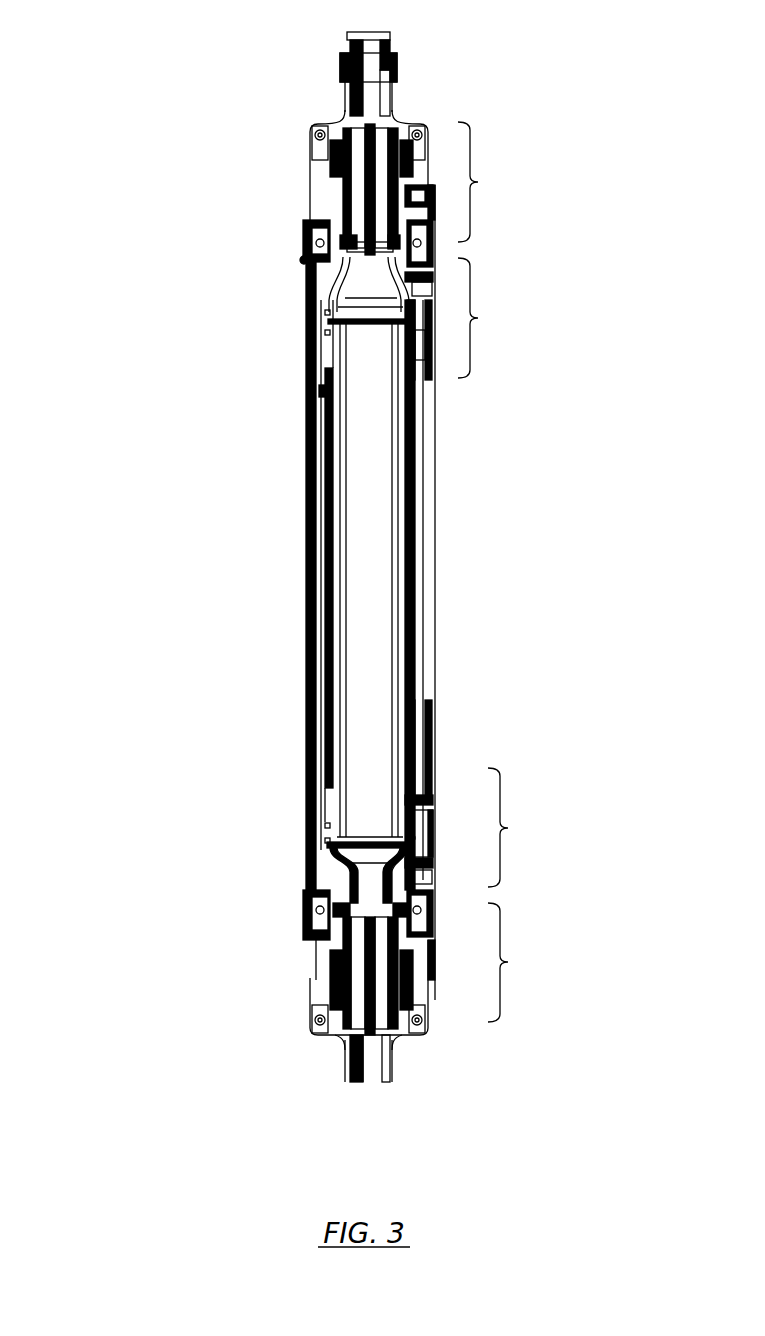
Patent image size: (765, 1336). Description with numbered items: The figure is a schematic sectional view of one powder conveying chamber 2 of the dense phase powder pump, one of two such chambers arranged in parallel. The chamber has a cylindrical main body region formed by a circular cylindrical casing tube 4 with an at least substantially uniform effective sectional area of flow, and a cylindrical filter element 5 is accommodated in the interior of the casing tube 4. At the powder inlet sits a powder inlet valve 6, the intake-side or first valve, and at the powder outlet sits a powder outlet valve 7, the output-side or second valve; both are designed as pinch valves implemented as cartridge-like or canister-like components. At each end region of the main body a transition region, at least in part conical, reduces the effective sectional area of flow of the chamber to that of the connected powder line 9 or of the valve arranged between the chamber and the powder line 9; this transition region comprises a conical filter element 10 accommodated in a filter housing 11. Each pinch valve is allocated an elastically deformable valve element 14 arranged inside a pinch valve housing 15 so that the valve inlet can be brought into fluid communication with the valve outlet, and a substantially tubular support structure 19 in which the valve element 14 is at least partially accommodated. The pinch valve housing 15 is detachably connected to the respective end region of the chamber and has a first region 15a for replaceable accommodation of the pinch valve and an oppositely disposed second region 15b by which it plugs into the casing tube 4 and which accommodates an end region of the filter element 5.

The powder conveying chamber 2 is at (620, 109).
The casing tube 4 is at (310, 477).
The filter element 5 is at (335, 542).
The powder inlet valve 6 is at (90, 1035).
The powder outlet valve 7 is at (93, 127).
The powder line 9 is at (363, 77).
The conical filter element 10 is at (340, 293).
The filter housing 11 is at (308, 308).
The valve element 14 is at (362, 165).
The pinch valve housing 15 is at (320, 213).
The first region 15a is at (508, 572).
The second region 15b is at (508, 572).
The support structure 19 is at (340, 190).